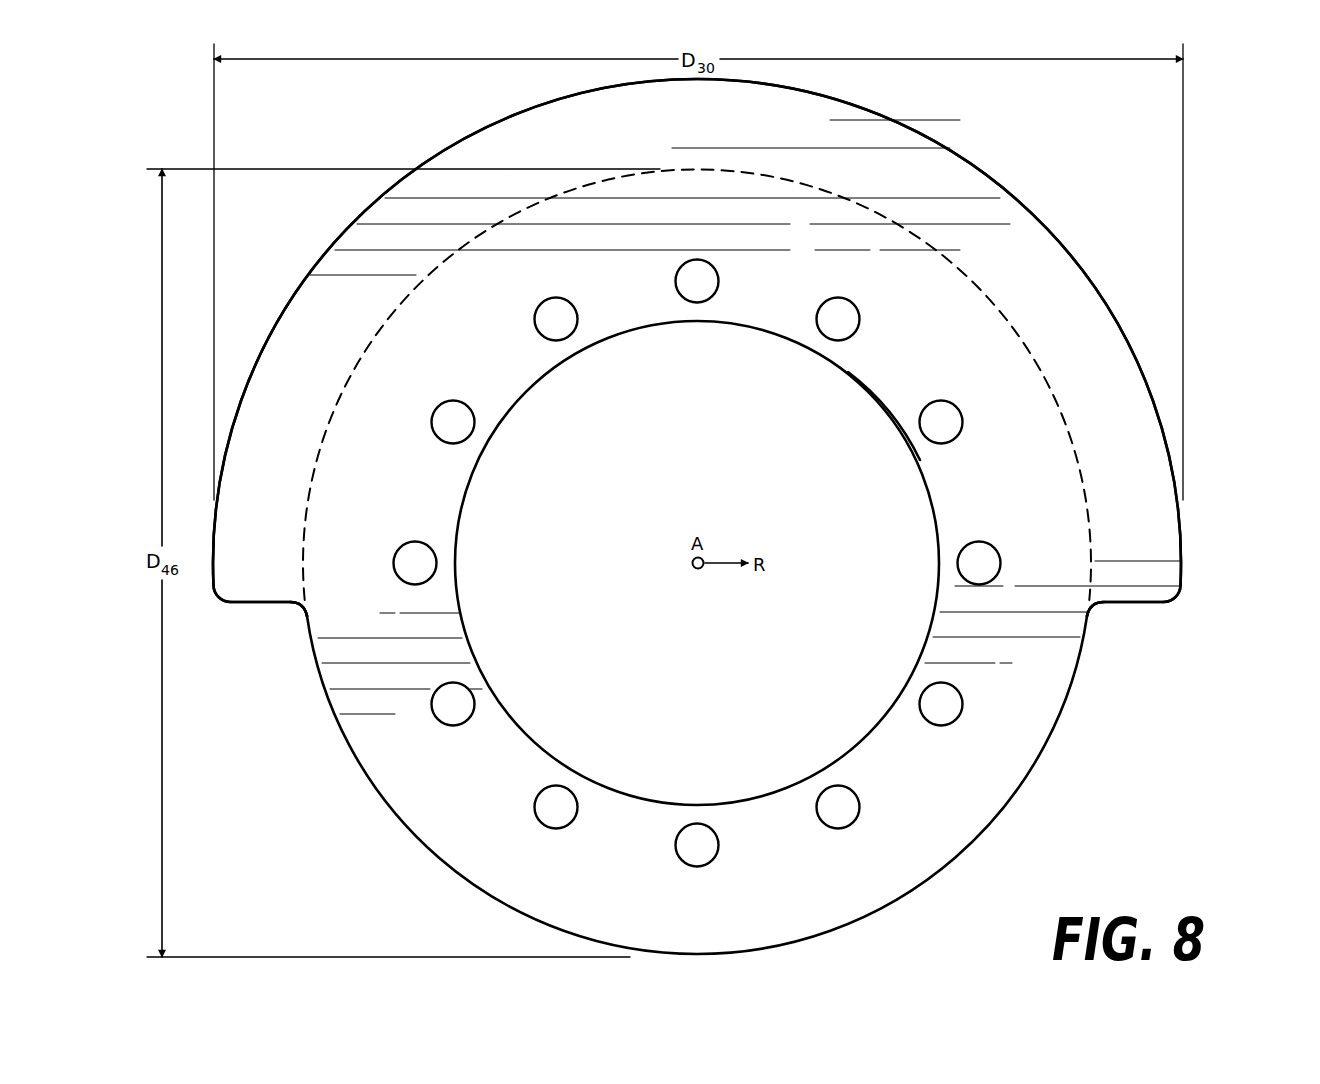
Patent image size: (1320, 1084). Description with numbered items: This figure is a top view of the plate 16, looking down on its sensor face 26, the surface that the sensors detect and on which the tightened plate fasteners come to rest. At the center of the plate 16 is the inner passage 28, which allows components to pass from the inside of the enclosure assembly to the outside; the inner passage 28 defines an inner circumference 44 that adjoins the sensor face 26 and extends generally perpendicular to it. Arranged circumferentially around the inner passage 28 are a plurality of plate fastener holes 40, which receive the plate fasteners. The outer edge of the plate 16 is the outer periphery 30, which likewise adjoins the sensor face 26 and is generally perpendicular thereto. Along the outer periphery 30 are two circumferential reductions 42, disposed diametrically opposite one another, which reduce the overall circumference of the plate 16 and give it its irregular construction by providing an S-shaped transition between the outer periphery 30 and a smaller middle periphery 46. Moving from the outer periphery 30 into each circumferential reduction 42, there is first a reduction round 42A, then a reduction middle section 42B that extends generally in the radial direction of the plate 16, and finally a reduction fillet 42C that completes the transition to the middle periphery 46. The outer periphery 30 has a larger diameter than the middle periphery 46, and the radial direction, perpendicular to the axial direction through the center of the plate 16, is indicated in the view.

The plate 16 is at (1124, 233).
The sensor face 26 is at (1064, 479).
The inner passage 28 is at (498, 703).
The outer periphery 30 is at (1153, 392).
The plate fastener holes 40 is at (952, 412).
The circumferential reductions 42 is at (266, 603).
The reduction round 42A is at (220, 592).
The reduction middle section 42B is at (1140, 602).
The reduction fillet 42C is at (300, 612).
The inner circumference 44 is at (848, 372).
The middle periphery 46 is at (892, 912).